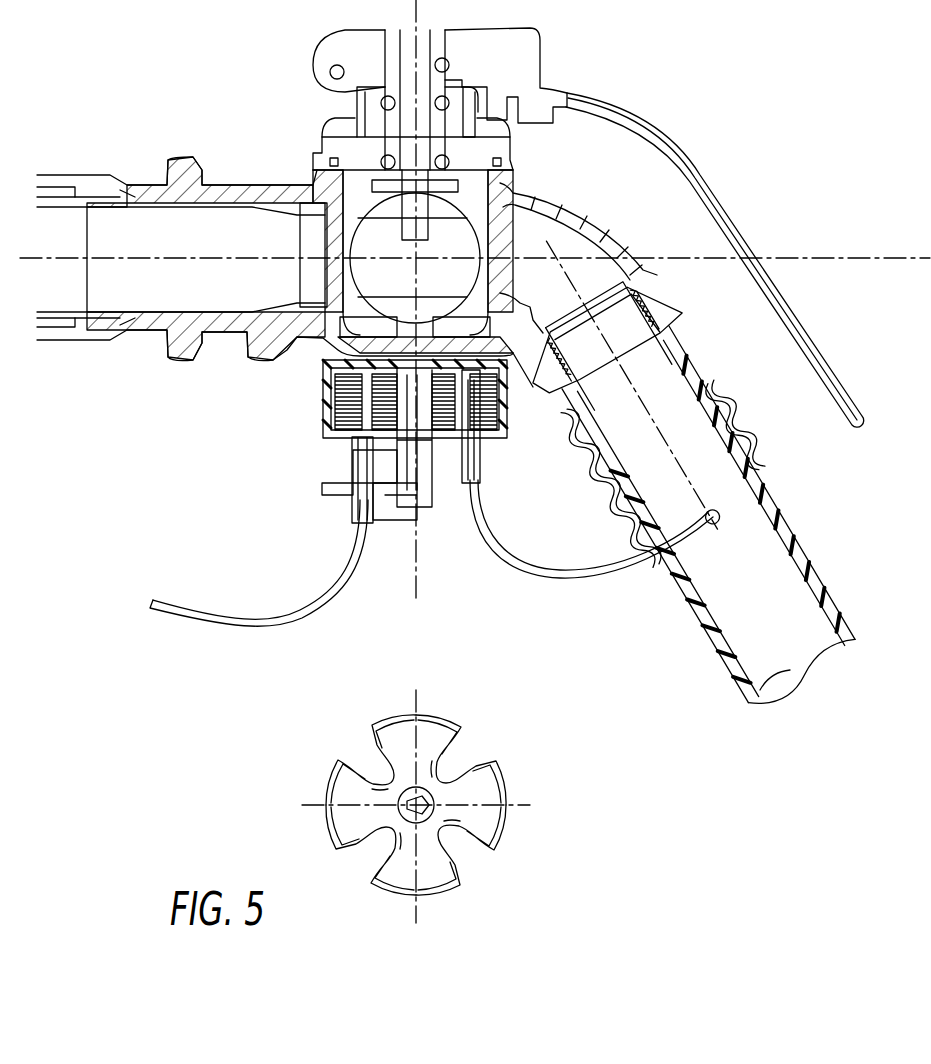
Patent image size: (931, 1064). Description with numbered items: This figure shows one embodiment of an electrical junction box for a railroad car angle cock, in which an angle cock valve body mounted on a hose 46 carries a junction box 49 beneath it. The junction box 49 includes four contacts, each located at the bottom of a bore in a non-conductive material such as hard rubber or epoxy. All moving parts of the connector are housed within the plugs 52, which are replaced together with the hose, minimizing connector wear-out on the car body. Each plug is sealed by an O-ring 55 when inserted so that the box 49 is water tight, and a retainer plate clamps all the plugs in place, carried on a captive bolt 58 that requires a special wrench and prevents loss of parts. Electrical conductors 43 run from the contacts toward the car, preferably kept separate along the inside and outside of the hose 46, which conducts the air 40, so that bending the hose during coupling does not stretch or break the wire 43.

The air 40 is at (768, 594).
The electrical conductor 43 is at (273, 633).
The hose 46 is at (760, 680).
The junction box 49 is at (323, 364).
The plugs 52 is at (352, 466).
The O-ring 55 is at (327, 428).
The captive bolt 58 is at (395, 517).